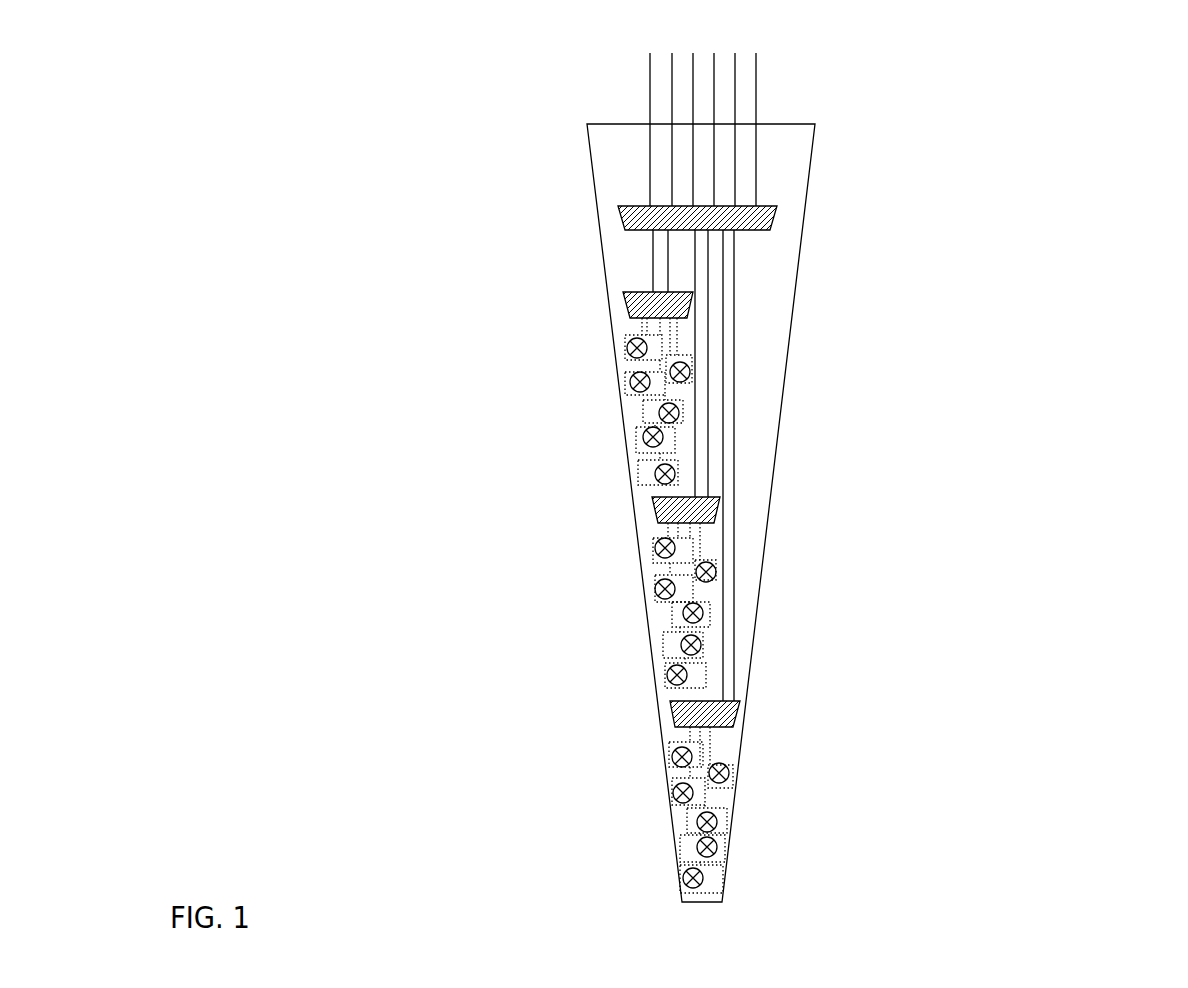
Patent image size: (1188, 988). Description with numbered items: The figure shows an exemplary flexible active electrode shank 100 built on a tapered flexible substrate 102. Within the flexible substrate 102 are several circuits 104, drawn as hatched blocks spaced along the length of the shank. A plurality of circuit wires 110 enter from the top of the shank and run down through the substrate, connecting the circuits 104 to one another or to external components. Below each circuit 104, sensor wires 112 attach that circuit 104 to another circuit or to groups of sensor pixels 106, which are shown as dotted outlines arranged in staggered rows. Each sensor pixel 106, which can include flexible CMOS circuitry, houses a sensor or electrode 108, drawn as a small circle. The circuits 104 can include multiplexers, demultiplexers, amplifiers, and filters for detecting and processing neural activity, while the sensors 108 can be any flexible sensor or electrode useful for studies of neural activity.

The flexible active electrode shank 100 is at (1048, 60).
The flexible substrate 102 is at (820, 142).
The circuit 104 is at (780, 218).
The sensor pixel 106 is at (642, 460).
The sensor or electrode 108 is at (710, 618).
The circuit wire 110 is at (760, 82).
The sensor wire 112 is at (663, 328).